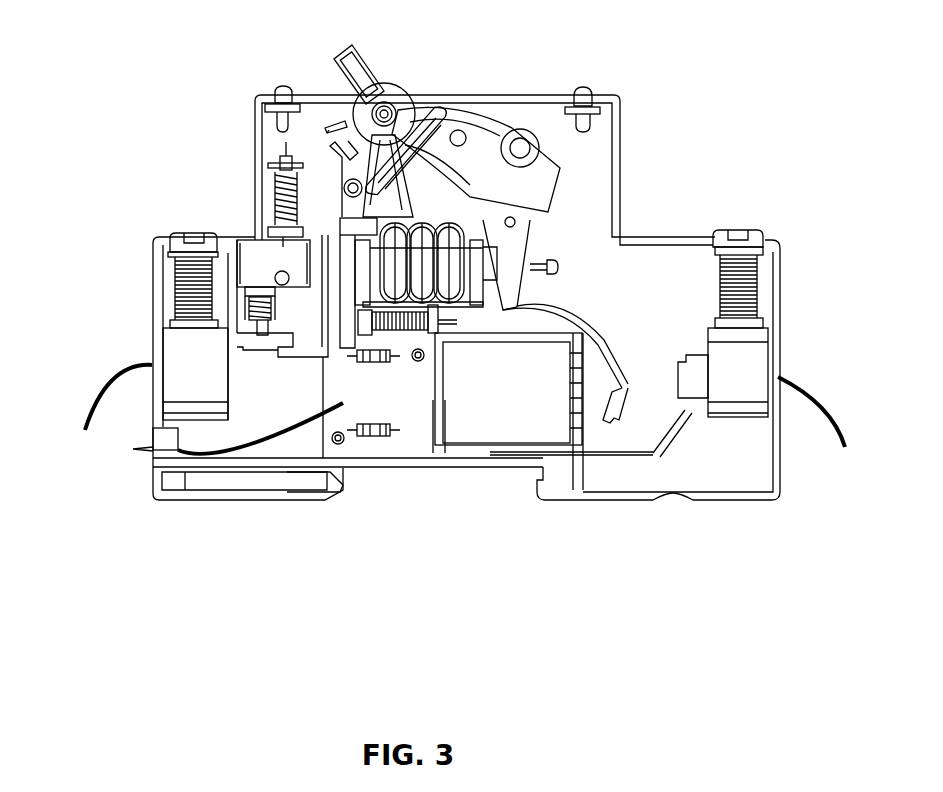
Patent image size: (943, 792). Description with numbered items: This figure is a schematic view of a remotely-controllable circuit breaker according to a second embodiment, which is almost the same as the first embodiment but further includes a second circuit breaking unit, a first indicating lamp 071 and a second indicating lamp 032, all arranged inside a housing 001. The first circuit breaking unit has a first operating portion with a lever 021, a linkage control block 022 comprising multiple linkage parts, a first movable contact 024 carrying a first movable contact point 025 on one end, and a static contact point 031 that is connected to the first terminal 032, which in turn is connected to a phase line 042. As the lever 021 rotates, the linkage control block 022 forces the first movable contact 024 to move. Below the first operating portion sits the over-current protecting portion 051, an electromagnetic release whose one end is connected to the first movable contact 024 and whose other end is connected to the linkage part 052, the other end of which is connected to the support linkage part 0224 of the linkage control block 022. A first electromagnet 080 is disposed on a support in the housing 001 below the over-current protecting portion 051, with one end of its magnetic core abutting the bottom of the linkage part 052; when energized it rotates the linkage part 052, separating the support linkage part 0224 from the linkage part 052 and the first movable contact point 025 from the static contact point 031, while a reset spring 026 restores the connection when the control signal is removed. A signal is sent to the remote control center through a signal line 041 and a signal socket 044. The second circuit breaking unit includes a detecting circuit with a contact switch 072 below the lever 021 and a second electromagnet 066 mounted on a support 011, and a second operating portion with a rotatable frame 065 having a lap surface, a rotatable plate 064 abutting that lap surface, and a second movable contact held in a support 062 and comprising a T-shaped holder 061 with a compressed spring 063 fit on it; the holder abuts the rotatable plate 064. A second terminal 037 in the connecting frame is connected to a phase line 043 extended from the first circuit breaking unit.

The housing 001 is at (718, 505).
The support 011 is at (274, 156).
The lever 021 is at (366, 70).
The linkage control block 022 is at (443, 120).
The support linkage part 0224 is at (426, 162).
The first movable contact 024 is at (580, 318).
The first movable contact point 025 is at (624, 382).
The reset spring 026 is at (370, 208).
The static contact point 031 is at (694, 390).
The first terminal 032 is at (584, 93).
The second terminal 037 is at (184, 381).
The signal line 041 is at (236, 450).
The phase line 042 is at (824, 420).
The phase line 043 is at (104, 380).
The signal socket 044 is at (172, 445).
The over-current protecting portion 051 is at (463, 257).
The linkage part 052 is at (343, 259).
The T-shaped holder 061 is at (238, 343).
The support 062 is at (240, 306).
The spring 063 is at (249, 290).
The rotatable plate 064 is at (252, 275).
The rotatable frame 065 is at (280, 243).
The second electromagnet 066 is at (279, 196).
The first indicating lamp 071 is at (279, 88).
The contact switch 072 is at (331, 122).
The first electromagnet 080 is at (419, 334).